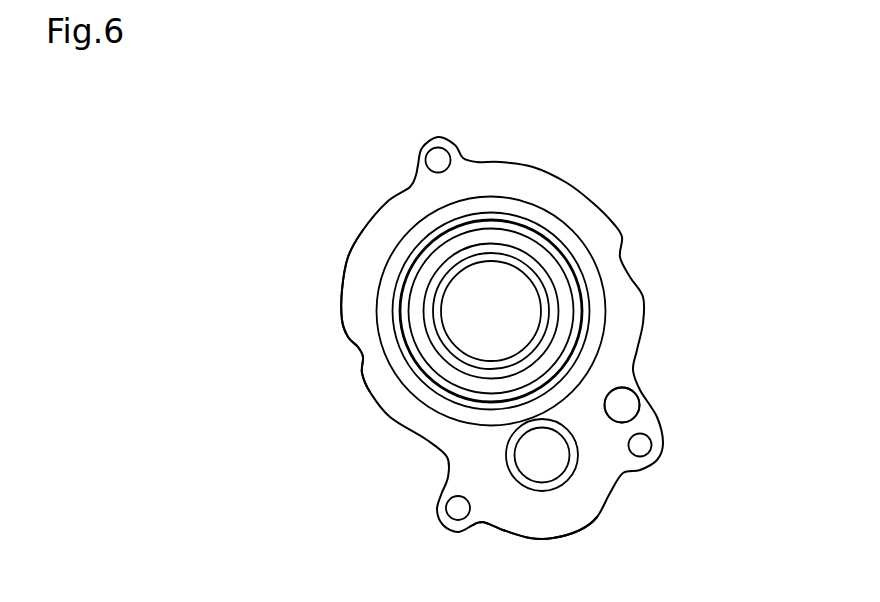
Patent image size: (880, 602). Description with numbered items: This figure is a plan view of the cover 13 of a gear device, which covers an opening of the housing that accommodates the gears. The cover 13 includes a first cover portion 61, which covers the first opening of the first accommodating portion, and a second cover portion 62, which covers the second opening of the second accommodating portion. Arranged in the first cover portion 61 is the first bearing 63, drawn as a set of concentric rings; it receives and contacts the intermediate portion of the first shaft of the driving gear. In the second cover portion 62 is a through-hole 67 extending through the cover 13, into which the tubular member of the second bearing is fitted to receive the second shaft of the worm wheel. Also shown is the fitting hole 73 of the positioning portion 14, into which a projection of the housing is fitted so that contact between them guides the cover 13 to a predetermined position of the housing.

The cover 13 is at (643, 144).
The positioning portion 14 is at (622, 405).
The first cover portion 61 is at (371, 357).
The second cover portion 62 is at (520, 523).
The first bearing 63 is at (460, 362).
The through-hole 67 is at (562, 445).
The fitting hole 73 is at (628, 402).